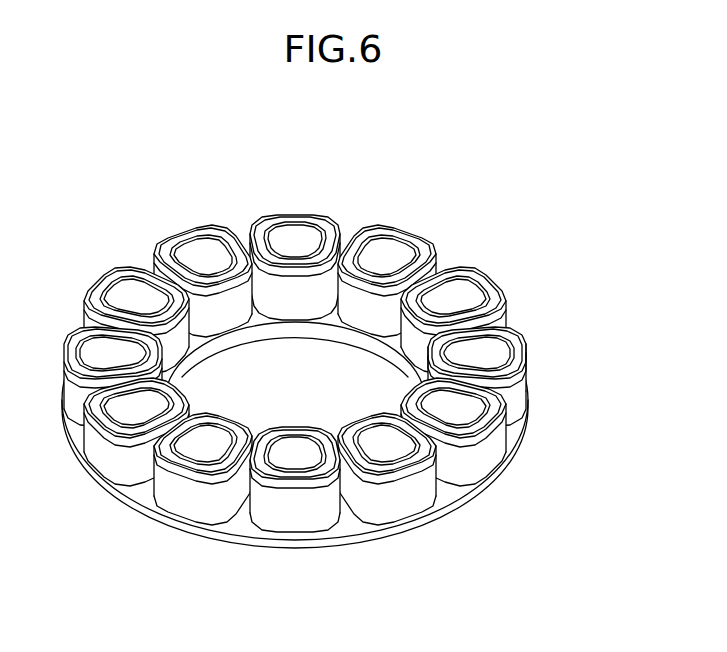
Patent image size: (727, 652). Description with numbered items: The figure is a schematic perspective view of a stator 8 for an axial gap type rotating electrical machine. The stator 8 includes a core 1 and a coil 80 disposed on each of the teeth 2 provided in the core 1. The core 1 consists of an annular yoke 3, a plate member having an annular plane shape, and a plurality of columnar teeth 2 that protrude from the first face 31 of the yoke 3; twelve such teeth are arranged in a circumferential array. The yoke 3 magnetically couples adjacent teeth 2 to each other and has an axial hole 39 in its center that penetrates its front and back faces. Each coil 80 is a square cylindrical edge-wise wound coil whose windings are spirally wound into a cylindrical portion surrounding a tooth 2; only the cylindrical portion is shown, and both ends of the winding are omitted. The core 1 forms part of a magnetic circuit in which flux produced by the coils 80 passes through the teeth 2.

The core 1 is at (302, 596).
The teeth 2 is at (298, 460).
The yoke 3 is at (348, 523).
The stator 8 is at (113, 191).
The first face 31 is at (140, 492).
The hole 39 is at (319, 334).
The coil 80 is at (262, 512).